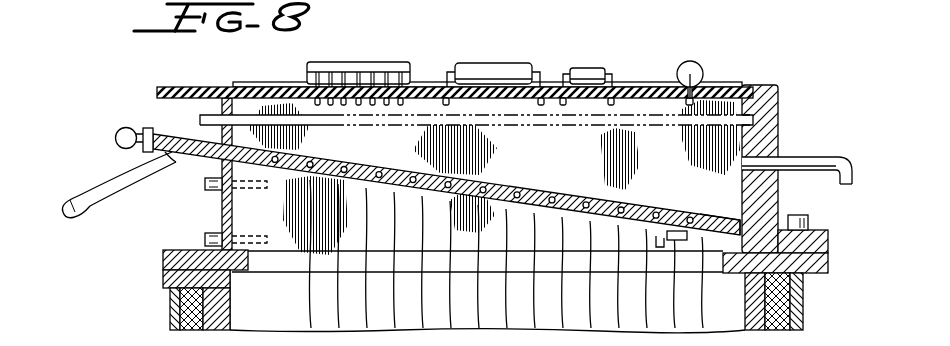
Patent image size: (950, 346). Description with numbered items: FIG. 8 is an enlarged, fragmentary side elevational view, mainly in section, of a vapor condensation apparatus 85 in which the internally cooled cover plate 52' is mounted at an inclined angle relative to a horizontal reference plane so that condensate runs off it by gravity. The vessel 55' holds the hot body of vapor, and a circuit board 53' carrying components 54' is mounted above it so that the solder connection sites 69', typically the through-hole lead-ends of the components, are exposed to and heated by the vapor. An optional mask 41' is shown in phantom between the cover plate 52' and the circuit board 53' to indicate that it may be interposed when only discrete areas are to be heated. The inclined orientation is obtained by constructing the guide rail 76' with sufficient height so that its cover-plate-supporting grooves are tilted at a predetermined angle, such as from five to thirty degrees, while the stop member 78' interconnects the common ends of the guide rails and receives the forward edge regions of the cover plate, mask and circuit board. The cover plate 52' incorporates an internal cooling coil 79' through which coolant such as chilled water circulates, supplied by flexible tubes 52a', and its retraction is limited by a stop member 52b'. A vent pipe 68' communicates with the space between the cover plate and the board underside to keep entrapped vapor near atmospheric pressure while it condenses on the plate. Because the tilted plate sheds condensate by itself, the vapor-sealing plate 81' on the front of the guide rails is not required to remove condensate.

The circuit board 53' is at (443, 74).
The components 54' is at (459, 54).
The vapor condensation apparatus 85 is at (634, 80).
The solder connection sites 69' is at (504, 125).
The mask 41' is at (476, 138).
The cover plate 52' is at (428, 182).
The guide rail 76' is at (494, 177).
The vent pipe 68' is at (799, 147).
The stop member 78' is at (788, 169).
The vapor-sealing plate 81' is at (215, 212).
The cooling coil 79' is at (506, 254).
The flexible tubes 52a' is at (91, 193).
The stop member 52b' is at (650, 269).
The vessel 55' is at (800, 272).